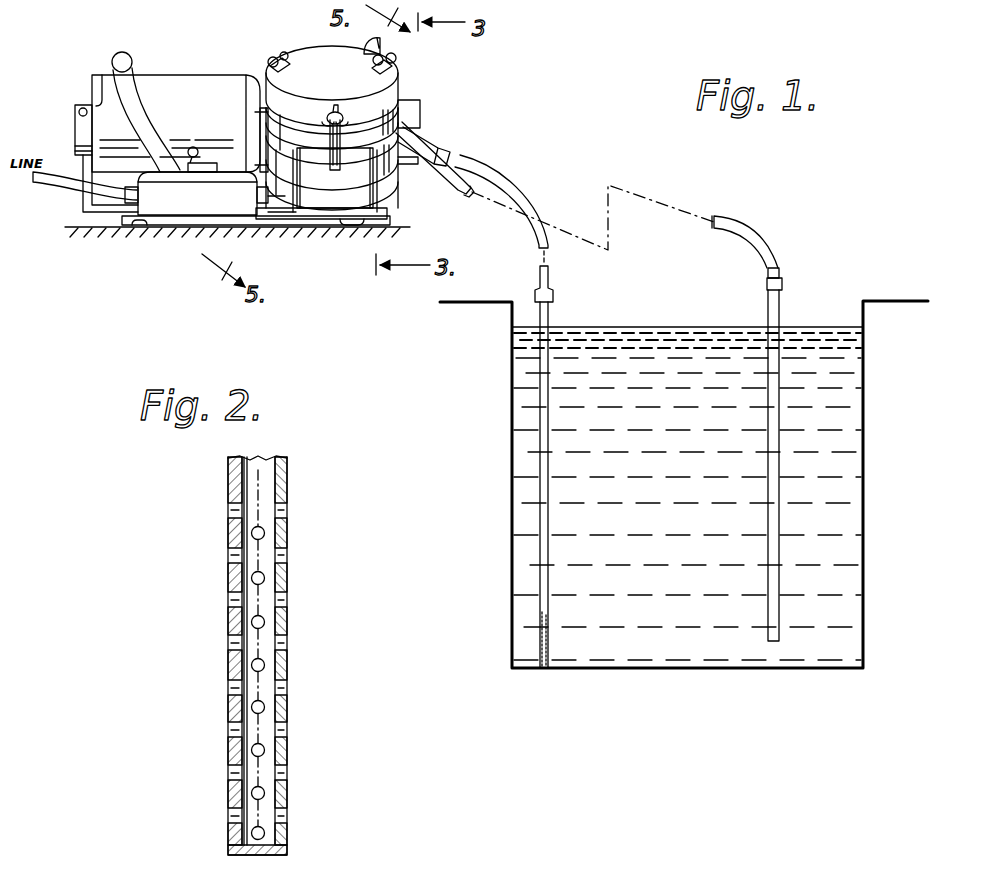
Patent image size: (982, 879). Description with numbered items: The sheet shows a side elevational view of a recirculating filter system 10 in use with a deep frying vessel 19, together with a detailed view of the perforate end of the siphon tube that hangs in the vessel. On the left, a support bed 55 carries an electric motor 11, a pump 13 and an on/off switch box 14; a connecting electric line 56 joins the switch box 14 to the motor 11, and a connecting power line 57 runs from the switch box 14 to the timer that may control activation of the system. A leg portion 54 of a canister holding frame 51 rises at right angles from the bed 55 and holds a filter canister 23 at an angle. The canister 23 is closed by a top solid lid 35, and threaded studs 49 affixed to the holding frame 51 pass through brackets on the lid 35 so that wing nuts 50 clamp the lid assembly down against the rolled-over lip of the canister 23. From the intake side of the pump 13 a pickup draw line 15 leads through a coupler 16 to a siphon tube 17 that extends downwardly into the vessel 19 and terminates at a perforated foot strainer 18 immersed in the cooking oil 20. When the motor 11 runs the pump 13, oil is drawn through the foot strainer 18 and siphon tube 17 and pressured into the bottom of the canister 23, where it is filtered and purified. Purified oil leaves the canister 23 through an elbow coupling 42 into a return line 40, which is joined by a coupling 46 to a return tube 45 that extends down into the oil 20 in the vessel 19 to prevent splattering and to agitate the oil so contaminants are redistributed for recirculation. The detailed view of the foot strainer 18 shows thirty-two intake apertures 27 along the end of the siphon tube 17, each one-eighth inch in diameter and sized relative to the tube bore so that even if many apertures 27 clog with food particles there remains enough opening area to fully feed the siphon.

In FIG. 1, the recirculating filter system 10 is at (488, 97).
In FIG. 1, the electric motor 11 is at (204, 80).
In FIG. 1, the pump 13 is at (421, 108).
In FIG. 1, the on/off switch box 14 is at (196, 193).
In FIG. 1, the pickup draw line 15 is at (538, 276).
In FIG. 1, the coupler 16 is at (458, 157).
In FIG. 1, the siphon tube 17 is at (540, 394).
In FIG. 2, the siphon tube 17 is at (288, 476).
In FIG. 1, the perforated foot strainer 18 is at (540, 632).
In FIG. 2, the perforated foot strainer 18 is at (224, 771).
In FIG. 1, the deep frying vessel 19 is at (865, 488).
In FIG. 1, the cooking oil 20 is at (697, 612).
In FIG. 1, the filter canister 23 is at (326, 192).
In FIG. 2, the intake apertures 27 is at (230, 600).
In FIG. 1, the top solid lid 35 is at (332, 86).
In FIG. 1, the return line 40 is at (462, 186).
In FIG. 1, the elbow coupling 42 is at (386, 41).
In FIG. 1, the return tube 45 is at (774, 426).
In FIG. 1, the coupling 46 is at (781, 272).
In FIG. 1, the threaded studs 49 is at (326, 138).
In FIG. 1, the wing nuts 50 is at (278, 58).
In FIG. 1, the canister holding frame 51 is at (360, 165).
In FIG. 1, the leg portion 54 is at (372, 204).
In FIG. 1, the support bed 55 is at (185, 230).
In FIG. 1, the connecting electric line 56 is at (143, 104).
In FIG. 1, the connecting power line 57 is at (277, 206).